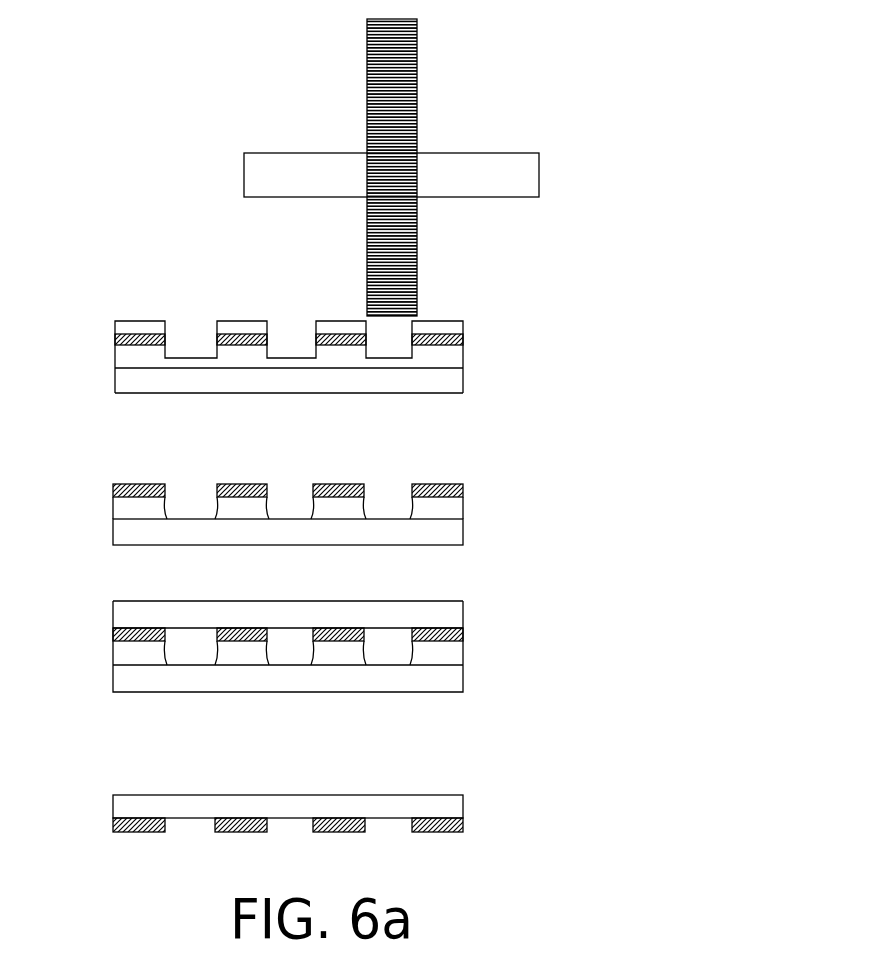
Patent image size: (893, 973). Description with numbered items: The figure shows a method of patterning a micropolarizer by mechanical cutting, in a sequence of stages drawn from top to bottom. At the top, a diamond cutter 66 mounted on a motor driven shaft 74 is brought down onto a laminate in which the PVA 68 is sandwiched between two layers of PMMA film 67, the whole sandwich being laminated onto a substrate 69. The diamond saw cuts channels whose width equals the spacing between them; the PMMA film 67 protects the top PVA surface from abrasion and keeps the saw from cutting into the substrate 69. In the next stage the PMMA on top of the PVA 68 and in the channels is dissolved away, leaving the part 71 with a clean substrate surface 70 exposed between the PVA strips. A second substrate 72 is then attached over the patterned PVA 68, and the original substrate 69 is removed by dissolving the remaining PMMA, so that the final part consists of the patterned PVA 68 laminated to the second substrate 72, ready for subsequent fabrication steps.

The diamond cutter 66 is at (417, 246).
The motor driven shaft 74 is at (243, 183).
The PMMA film 67 is at (125, 321).
The PVA 68 is at (465, 340).
The substrate 69 is at (115, 383).
The clean substrate surface 70 is at (192, 513).
The part 71 is at (103, 513).
The second substrate 72 is at (172, 601).